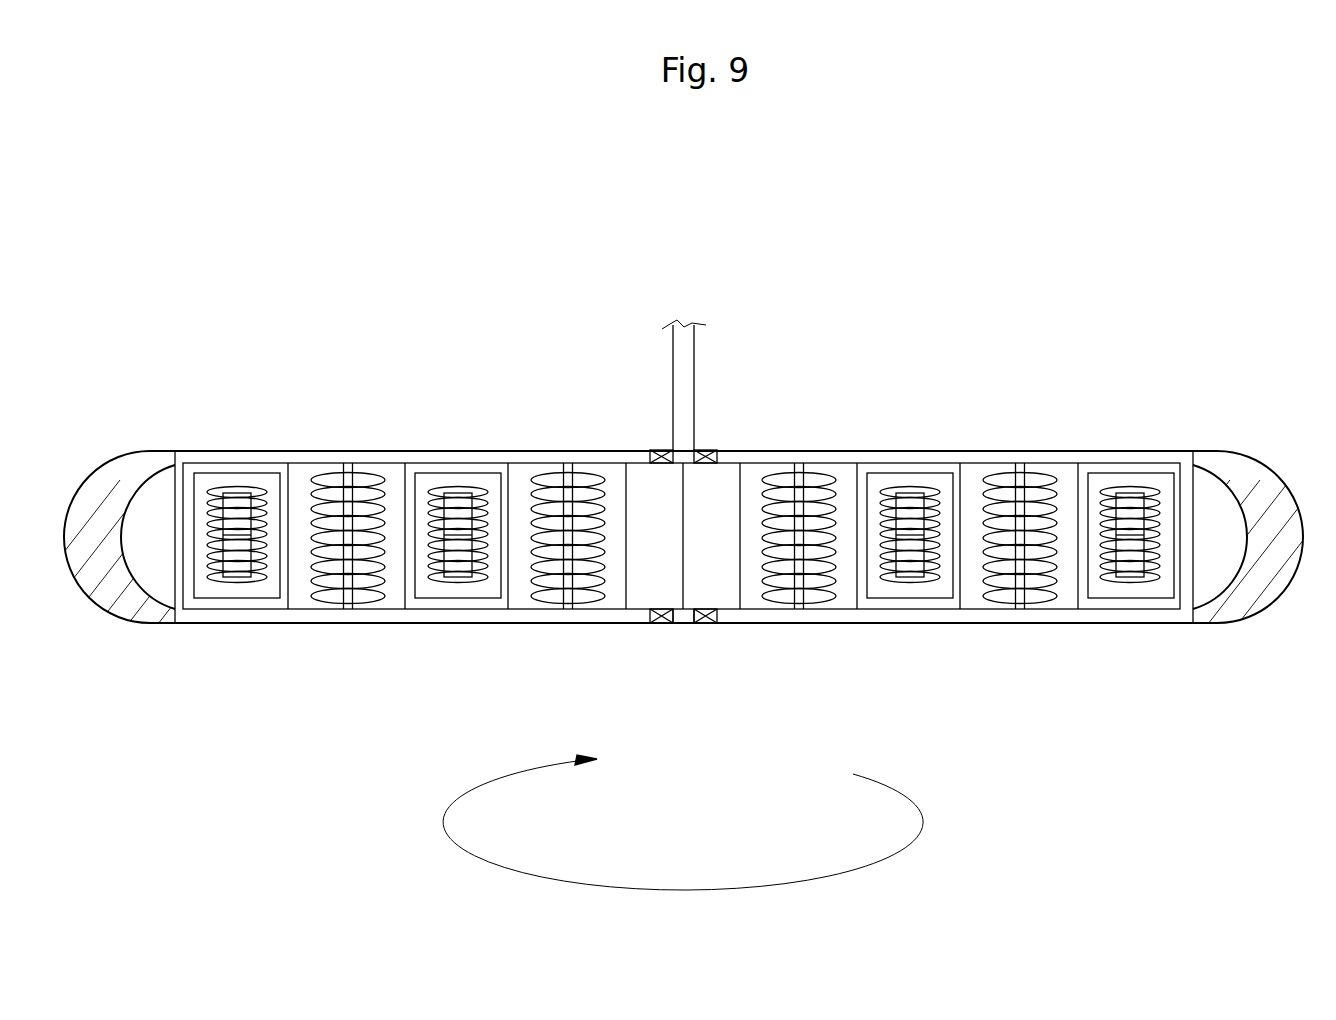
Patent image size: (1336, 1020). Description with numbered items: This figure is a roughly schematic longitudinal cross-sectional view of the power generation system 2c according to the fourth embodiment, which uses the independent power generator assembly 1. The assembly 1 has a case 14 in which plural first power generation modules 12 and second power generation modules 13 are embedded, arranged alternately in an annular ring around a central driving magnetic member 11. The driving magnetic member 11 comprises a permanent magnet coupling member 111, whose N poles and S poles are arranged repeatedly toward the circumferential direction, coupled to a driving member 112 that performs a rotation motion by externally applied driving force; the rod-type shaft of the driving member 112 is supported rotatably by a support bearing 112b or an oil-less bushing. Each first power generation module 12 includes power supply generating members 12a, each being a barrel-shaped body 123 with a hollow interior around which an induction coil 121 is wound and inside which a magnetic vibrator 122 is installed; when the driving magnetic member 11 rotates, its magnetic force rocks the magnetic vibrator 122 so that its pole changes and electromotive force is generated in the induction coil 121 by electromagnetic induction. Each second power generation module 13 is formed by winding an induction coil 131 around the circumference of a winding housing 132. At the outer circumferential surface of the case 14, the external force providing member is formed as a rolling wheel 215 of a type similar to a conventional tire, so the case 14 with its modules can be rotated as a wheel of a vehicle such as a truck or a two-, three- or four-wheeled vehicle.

The independent power generator assembly 1 is at (1012, 444).
The power generation system 2c is at (228, 91).
The driving magnetic member 11 is at (862, 352).
The permanent magnet coupling member 111 is at (725, 477).
The driving member 112 is at (687, 405).
The support bearing 112b is at (705, 624).
The first power generation module 12 is at (213, 257).
The power supply generating member 12a is at (132, 332).
The induction coil 121 is at (221, 487).
The magnetic vibrator 122 is at (243, 492).
The magnet unit case 123 is at (200, 472).
The second power generation module 13 is at (370, 614).
The induction coil 131 is at (540, 477).
The winding housing 132 is at (565, 480).
The case 14 is at (1096, 458).
The rolling wheel 215 is at (1236, 472).